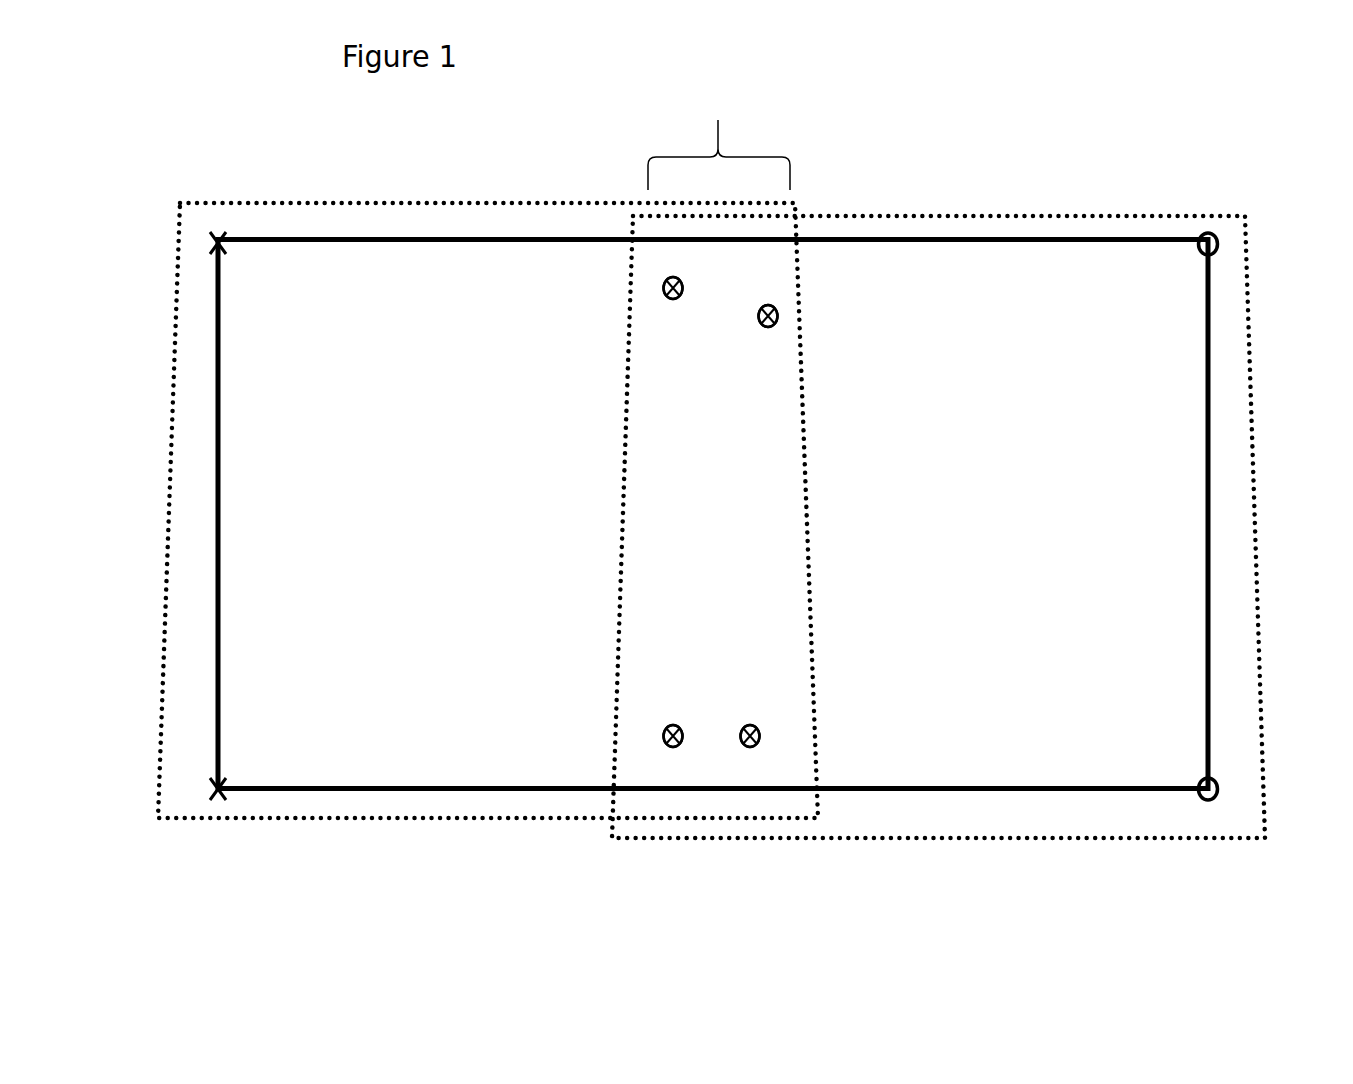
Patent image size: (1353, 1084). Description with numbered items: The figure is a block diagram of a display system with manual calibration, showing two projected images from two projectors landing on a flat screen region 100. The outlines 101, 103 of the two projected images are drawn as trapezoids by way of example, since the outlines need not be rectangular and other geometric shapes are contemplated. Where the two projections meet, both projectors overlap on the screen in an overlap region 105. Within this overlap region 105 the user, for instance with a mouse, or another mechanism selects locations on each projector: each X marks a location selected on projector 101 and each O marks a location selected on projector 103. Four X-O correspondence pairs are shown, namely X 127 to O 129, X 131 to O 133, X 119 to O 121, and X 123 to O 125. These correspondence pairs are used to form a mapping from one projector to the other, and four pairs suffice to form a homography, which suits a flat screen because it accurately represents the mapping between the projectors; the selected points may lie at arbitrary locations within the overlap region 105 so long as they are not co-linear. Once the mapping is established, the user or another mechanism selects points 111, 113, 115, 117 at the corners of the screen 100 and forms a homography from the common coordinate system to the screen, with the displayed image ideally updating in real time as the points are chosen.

The flat screen region 100 is at (395, 798).
The outline of first projected image 101 is at (282, 190).
The outline of second projected image 103 is at (1027, 207).
The overlap region 105 is at (719, 132).
The screen corner point 111 is at (202, 790).
The screen corner point 113 is at (203, 240).
The screen corner point 115 is at (1222, 240).
The screen corner point 117 is at (1222, 798).
The X correspondence point 119 is at (672, 763).
The O correspondence point 121 is at (673, 736).
The X correspondence point 123 is at (757, 768).
The O correspondence point 125 is at (750, 736).
The X correspondence point 127 is at (657, 273).
The O correspondence point 129 is at (673, 288).
The X correspondence point 131 is at (775, 300).
The O correspondence point 133 is at (768, 316).